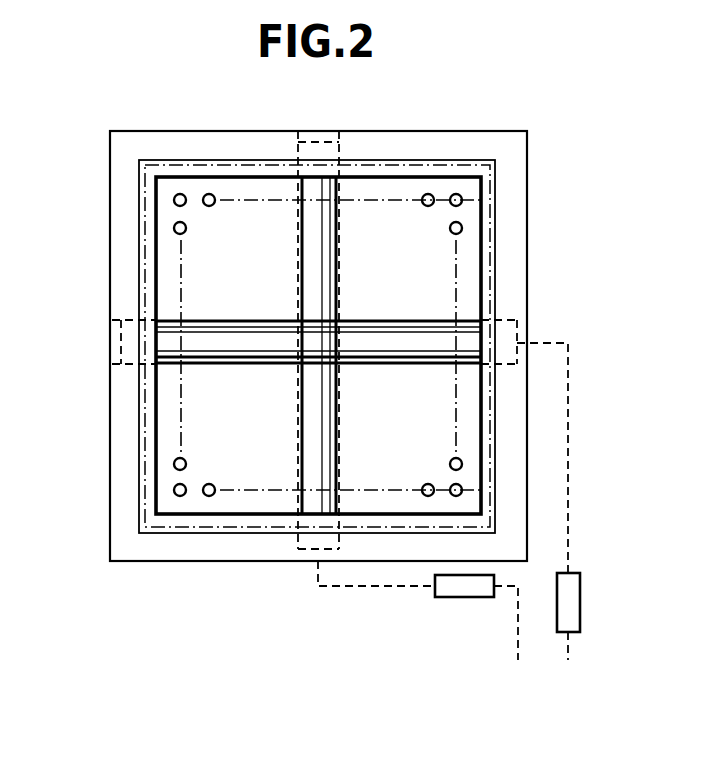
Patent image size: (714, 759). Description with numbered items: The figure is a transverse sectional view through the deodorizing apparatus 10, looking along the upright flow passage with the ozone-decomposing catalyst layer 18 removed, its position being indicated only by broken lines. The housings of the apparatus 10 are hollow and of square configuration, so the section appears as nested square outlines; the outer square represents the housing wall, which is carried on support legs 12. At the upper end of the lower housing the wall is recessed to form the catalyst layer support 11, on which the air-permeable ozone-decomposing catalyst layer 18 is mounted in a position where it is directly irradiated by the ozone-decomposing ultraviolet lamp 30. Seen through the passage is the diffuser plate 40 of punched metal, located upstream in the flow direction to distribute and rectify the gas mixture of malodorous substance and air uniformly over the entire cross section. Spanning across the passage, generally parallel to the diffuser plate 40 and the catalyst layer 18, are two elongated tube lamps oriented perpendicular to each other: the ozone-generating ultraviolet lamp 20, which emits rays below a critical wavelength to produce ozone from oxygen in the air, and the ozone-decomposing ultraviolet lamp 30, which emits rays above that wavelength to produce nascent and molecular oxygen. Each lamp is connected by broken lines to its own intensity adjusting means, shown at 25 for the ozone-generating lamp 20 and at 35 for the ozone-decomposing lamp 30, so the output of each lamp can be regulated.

The deodorizing apparatus 10 is at (531, 147).
The catalyst layer support 11 is at (151, 260).
The support legs 12 is at (546, 6).
The ozone-decomposing catalyst layer 18 is at (145, 298).
The ozone-generating ultraviolet lamp 20 is at (297, 502).
The intensity adjusting means 25 is at (462, 592).
The ozone-decomposing ultraviolet lamp 30 is at (442, 331).
The intensity adjusting means 35 is at (580, 593).
The diffuser plate 40 is at (473, 233).